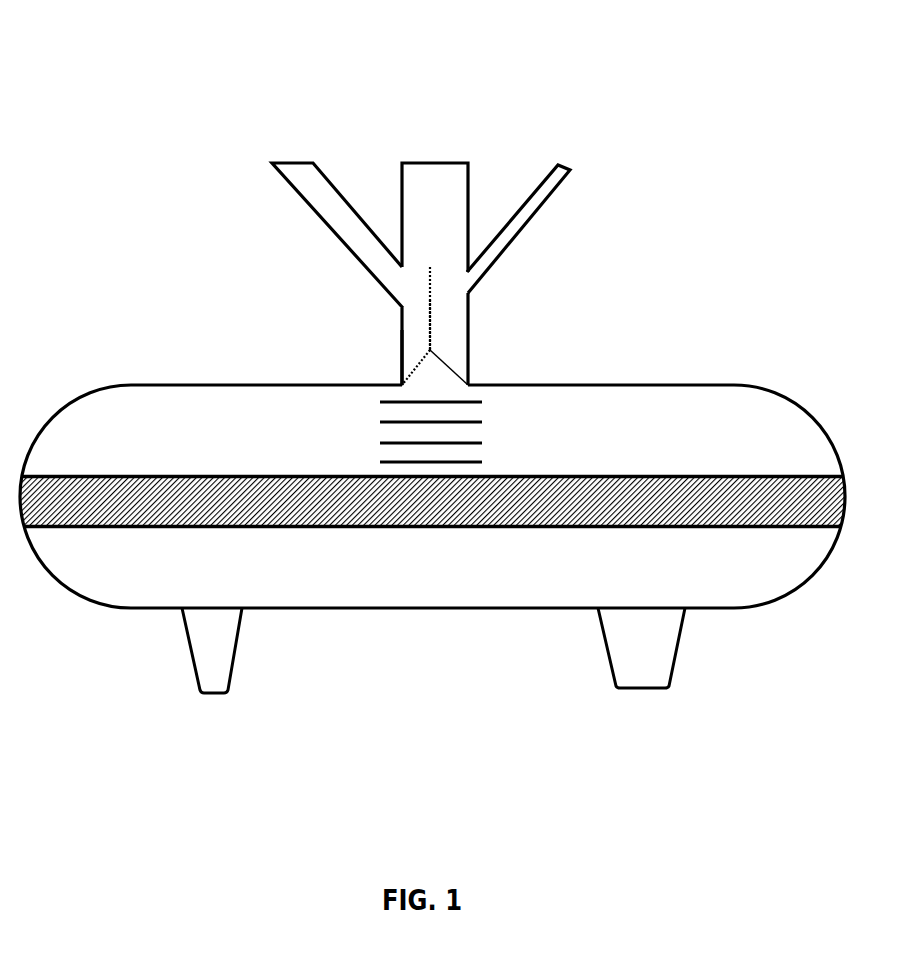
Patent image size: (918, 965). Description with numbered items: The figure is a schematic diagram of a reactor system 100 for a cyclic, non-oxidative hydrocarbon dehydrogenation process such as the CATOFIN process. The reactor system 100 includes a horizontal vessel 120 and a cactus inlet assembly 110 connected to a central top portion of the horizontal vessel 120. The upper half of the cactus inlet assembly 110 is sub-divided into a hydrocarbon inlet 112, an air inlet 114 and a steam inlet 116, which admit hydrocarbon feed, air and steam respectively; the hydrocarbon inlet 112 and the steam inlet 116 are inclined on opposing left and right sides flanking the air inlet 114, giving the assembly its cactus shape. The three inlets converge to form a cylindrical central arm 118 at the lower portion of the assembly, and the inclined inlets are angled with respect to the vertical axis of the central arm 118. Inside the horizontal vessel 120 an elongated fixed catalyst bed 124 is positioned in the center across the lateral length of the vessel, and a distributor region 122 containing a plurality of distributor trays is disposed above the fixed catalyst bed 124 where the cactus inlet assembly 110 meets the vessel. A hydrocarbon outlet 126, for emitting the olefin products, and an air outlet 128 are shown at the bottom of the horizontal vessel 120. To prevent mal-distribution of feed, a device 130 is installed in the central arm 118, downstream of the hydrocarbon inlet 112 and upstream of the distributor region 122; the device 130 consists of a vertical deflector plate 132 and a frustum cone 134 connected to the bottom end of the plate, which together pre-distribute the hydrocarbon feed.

The reactor system 100 is at (238, 58).
The cactus inlet assembly 110 is at (502, 88).
The hydrocarbon inlet 112 is at (291, 161).
The air inlet 114 is at (428, 162).
The steam inlet 116 is at (562, 166).
The central arm 118 is at (400, 345).
The horizontal vessel 120 is at (670, 382).
The distributor region 122 is at (478, 413).
The fixed catalyst bed 124 is at (648, 478).
The hydrocarbon outlet 126 is at (243, 640).
The air outlet 128 is at (606, 650).
The device 130 is at (431, 255).
The vertical deflector plate 132 is at (432, 312).
The frustum cone 134 is at (440, 357).